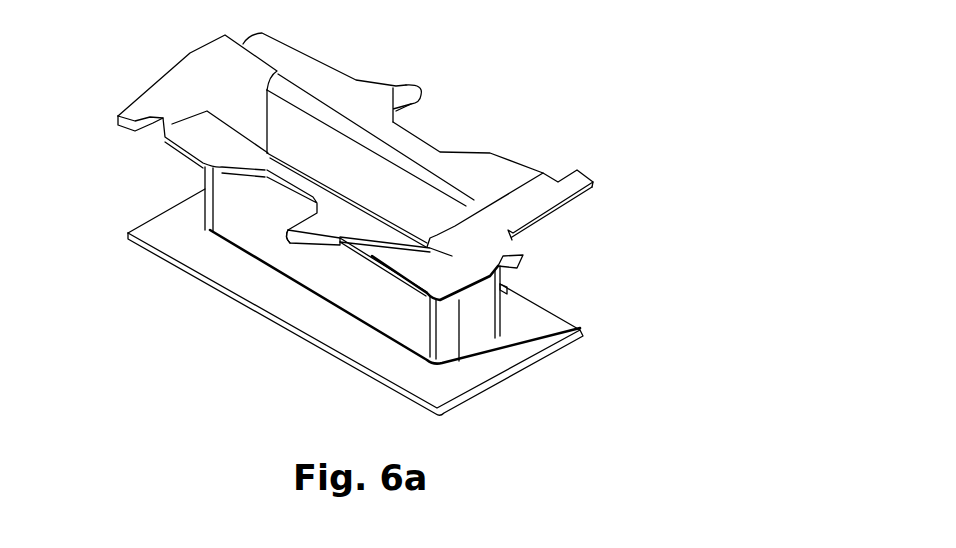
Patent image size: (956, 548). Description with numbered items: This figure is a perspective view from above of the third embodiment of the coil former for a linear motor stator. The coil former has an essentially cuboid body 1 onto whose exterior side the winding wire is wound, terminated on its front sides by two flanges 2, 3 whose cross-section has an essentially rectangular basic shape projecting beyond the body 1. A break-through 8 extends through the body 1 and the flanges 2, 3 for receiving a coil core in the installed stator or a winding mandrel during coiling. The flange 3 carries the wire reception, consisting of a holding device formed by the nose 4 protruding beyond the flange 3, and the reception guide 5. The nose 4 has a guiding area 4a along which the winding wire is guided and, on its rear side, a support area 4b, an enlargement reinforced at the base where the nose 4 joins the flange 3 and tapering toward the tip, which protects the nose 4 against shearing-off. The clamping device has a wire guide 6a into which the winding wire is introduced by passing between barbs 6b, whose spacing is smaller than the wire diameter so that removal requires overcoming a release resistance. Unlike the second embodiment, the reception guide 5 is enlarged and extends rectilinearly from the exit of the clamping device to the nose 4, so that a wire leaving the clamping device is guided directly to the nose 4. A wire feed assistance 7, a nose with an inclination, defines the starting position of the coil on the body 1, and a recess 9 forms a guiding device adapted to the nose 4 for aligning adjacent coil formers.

The body 1 is at (393, 298).
The flange 2 is at (583, 333).
The flange 3 is at (310, 58).
The nose 4 is at (420, 92).
The guiding area 4a is at (417, 107).
The support area 4b is at (407, 92).
The reception guide 5 is at (440, 277).
The wire guide 6a is at (505, 258).
The barb 6b is at (507, 287).
The wire feed assistance 7 is at (573, 183).
The break-through 8 is at (290, 114).
The recess 9 is at (363, 190).